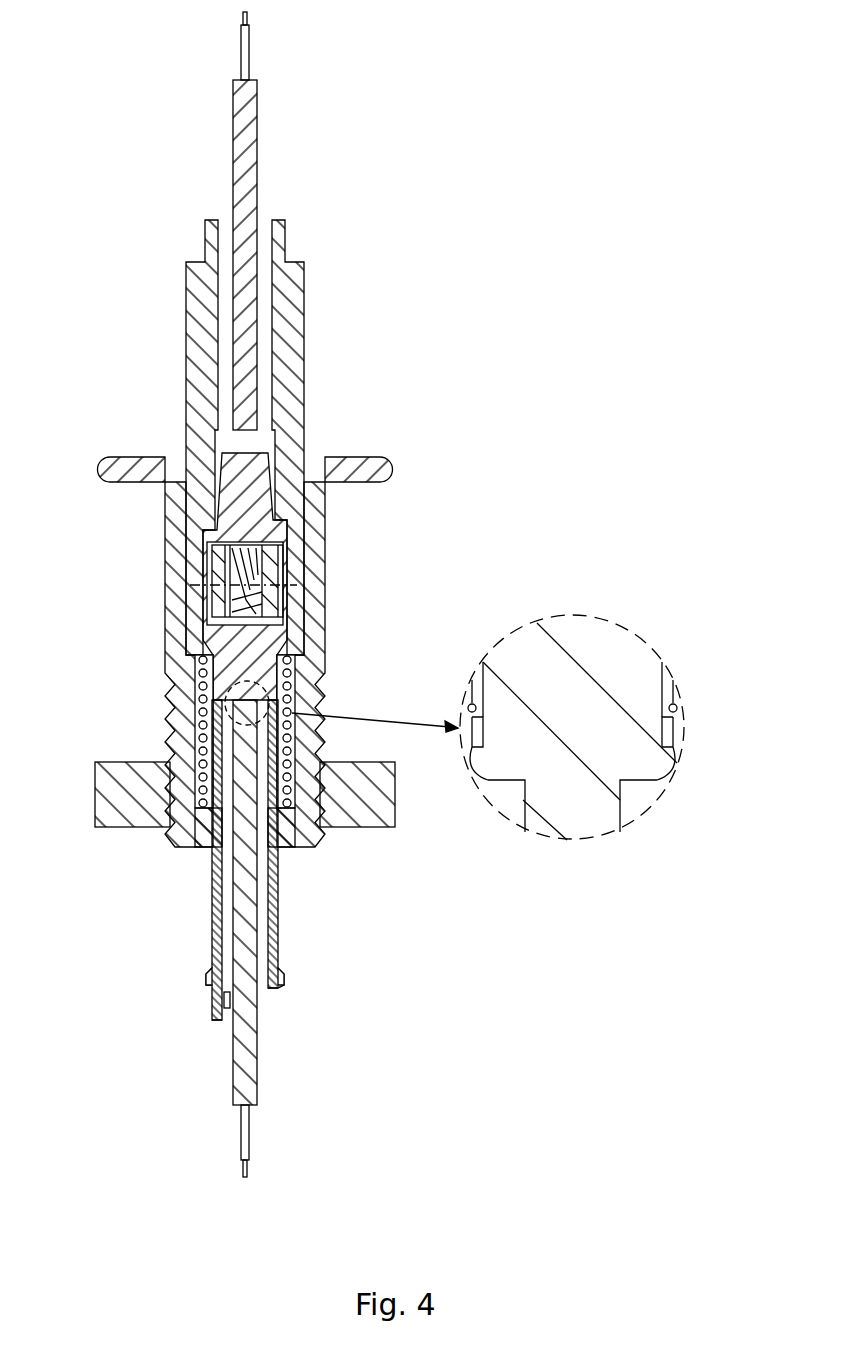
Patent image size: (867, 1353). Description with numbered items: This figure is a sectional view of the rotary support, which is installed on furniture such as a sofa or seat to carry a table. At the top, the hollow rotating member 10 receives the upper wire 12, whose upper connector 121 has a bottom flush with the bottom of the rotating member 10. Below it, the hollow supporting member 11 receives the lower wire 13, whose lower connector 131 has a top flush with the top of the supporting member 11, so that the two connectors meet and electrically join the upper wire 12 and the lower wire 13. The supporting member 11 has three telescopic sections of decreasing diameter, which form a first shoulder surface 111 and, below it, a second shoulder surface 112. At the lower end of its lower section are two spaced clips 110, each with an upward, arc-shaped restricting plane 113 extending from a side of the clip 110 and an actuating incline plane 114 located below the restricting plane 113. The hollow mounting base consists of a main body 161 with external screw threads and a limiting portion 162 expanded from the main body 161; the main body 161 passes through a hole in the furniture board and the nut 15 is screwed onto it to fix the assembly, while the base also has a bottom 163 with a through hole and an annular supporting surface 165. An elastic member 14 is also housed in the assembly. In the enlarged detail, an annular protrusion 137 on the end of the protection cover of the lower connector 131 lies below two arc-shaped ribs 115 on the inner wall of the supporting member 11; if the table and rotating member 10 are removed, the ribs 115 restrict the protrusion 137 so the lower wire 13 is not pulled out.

The rotating member 10 is at (293, 332).
The supporting member 11 is at (290, 628).
The upper wire 12 is at (240, 127).
The lower wire 13 is at (248, 1090).
The elastic member 14 is at (200, 788).
The nut 15 is at (105, 820).
The clip 110 is at (213, 930).
The first shoulder surface 111 is at (193, 665).
The second shoulder surface 112 is at (292, 838).
The restricting plane 113 is at (210, 972).
The actuating incline plane 114 is at (210, 987).
The rib 115 is at (467, 702).
The upper connector 121 is at (285, 563).
The lower connector 131 is at (208, 605).
The annular protrusion 137 is at (665, 763).
The main body 161 is at (318, 508).
The limiting portion 162 is at (107, 470).
The bottom 163 is at (200, 840).
The annular supporting surface 165 is at (318, 662).